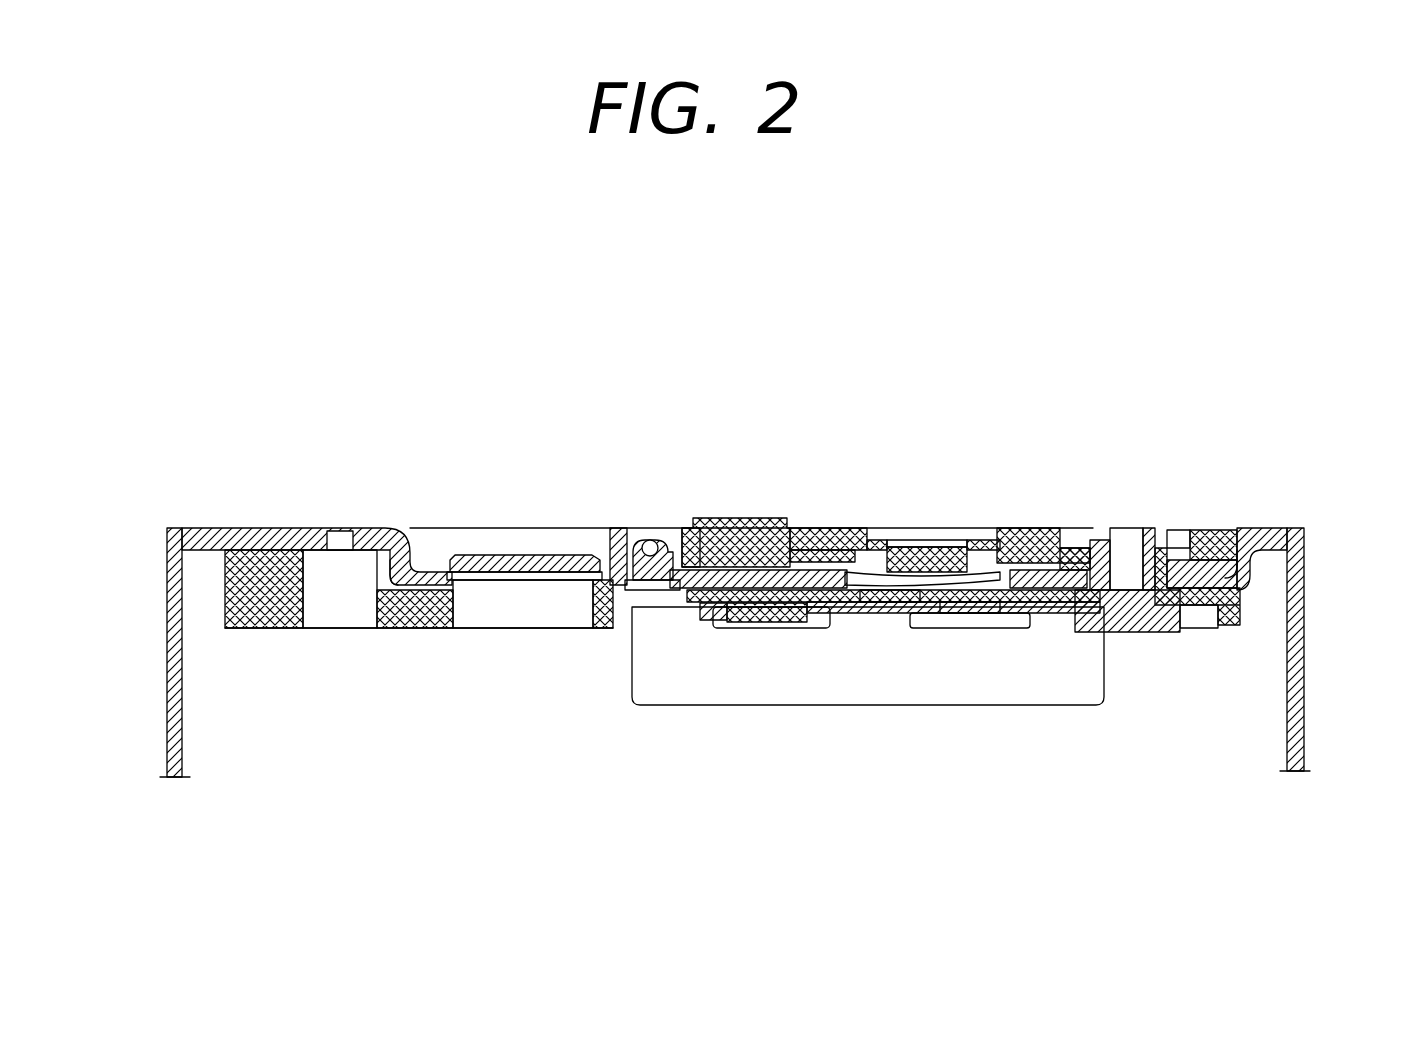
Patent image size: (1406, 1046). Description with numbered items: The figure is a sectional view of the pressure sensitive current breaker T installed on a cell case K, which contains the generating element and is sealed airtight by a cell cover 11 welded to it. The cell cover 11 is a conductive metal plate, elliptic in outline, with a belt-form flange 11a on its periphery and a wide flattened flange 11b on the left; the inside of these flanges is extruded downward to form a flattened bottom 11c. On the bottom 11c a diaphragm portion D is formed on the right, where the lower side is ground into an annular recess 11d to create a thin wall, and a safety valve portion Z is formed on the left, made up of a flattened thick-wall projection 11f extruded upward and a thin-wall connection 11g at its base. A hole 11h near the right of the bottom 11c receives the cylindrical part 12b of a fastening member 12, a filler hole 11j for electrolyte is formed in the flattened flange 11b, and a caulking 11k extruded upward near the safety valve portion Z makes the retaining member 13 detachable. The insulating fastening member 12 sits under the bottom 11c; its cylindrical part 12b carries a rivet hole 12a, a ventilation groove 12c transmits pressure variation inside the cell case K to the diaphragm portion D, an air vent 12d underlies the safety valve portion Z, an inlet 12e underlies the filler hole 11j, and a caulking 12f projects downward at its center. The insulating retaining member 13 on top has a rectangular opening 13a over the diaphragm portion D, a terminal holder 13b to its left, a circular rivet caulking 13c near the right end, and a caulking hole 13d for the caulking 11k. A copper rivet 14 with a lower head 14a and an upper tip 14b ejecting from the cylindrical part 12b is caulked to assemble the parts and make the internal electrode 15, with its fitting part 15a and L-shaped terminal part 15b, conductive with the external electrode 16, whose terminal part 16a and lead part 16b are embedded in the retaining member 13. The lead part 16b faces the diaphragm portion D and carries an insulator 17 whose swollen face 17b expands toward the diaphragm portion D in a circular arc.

The pressure sensitive current breaker T is at (142, 565).
The cell case K is at (150, 643).
The cell cover 11 is at (280, 526).
The belt-form flange 11a is at (1270, 528).
The flattened flange 11b is at (222, 528).
The bottom 11c is at (800, 615).
The annular recess 11d is at (975, 615).
The thick-wall projection 11f is at (548, 553).
The thin-wall connection 11g is at (440, 570).
The hole 11h is at (1208, 632).
The filler hole 11j is at (340, 528).
The caulking 11k is at (660, 528).
The safety valve portion Z is at (490, 552).
The fastening member 12 is at (268, 642).
The rivet hole 12a is at (1123, 632).
The cylindrical part 12b is at (1128, 533).
The ventilation groove 12c is at (830, 605).
The air vent 12d is at (465, 612).
The inlet 12e is at (335, 607).
The caulking 12f is at (745, 630).
The retaining member 13 is at (827, 516).
The opening 13a is at (870, 528).
The terminal holder 13b is at (797, 528).
The rivet caulking 13c is at (1078, 545).
The caulking hole 13d is at (633, 528).
The rivet 14 is at (1148, 640).
The head 14a is at (1165, 632).
The tip 14b is at (1160, 545).
The internal electrode 15 is at (660, 684).
The fitting part 15a is at (1045, 612).
The terminal part 15b is at (708, 690).
The external electrode 16 is at (758, 516).
The terminal part 16a is at (710, 522).
The lead part 16b is at (998, 528).
The insulator 17 is at (913, 545).
The swollen face 17b is at (890, 604).
The diaphragm portion D is at (963, 588).